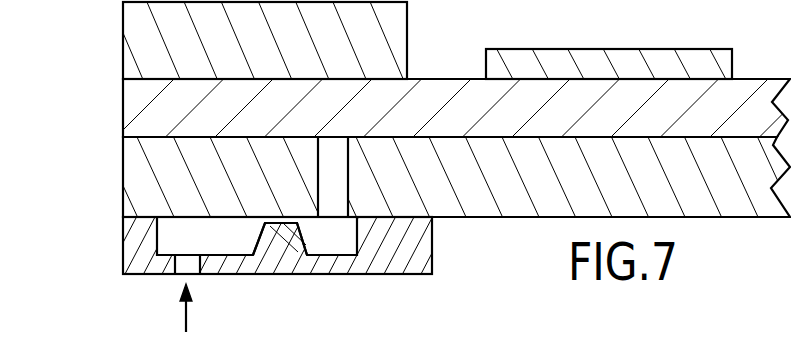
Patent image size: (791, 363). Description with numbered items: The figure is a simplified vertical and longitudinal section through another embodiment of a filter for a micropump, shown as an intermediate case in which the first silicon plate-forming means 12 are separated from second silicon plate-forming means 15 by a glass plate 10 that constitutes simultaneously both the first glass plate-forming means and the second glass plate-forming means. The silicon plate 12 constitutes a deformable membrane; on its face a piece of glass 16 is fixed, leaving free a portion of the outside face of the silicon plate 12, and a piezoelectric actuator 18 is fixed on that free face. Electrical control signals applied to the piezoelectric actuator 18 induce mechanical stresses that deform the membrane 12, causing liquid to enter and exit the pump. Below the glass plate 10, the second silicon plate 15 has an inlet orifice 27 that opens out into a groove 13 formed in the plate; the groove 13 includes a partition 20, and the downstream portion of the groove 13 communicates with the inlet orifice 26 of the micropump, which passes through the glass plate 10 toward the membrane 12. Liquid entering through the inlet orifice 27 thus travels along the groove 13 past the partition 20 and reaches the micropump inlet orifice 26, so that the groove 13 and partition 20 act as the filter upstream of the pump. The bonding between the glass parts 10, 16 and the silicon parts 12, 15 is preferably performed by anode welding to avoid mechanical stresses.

The glass plate 10 is at (123, 171).
The silicon plate 12 is at (123, 99).
The groove 13 is at (226, 235).
The second silicon plate 15 is at (123, 240).
The piece of glass 16 is at (123, 25).
The piezoelectric actuator 18 is at (500, 52).
The partition 20 is at (278, 233).
The inlet orifice of the micropump 26 is at (340, 202).
The inlet orifice 27 is at (181, 272).